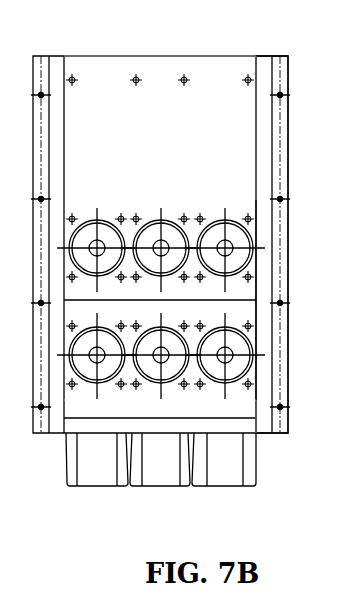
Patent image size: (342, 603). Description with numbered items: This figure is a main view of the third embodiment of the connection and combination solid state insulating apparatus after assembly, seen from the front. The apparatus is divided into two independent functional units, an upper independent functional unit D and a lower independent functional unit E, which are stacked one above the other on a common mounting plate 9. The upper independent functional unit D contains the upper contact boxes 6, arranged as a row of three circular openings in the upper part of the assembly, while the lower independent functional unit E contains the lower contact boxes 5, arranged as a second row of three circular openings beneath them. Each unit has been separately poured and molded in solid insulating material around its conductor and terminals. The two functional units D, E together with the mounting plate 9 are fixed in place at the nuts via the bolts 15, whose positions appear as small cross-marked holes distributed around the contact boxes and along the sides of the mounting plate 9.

The upper independent functional unit D is at (160, 84).
The mounting plate 9 is at (281, 73).
The bolts 15 is at (249, 81).
The upper contact boxes 6 is at (69, 243).
The lower contact boxes 5 is at (69, 354).
The lower independent functional unit E is at (110, 402).